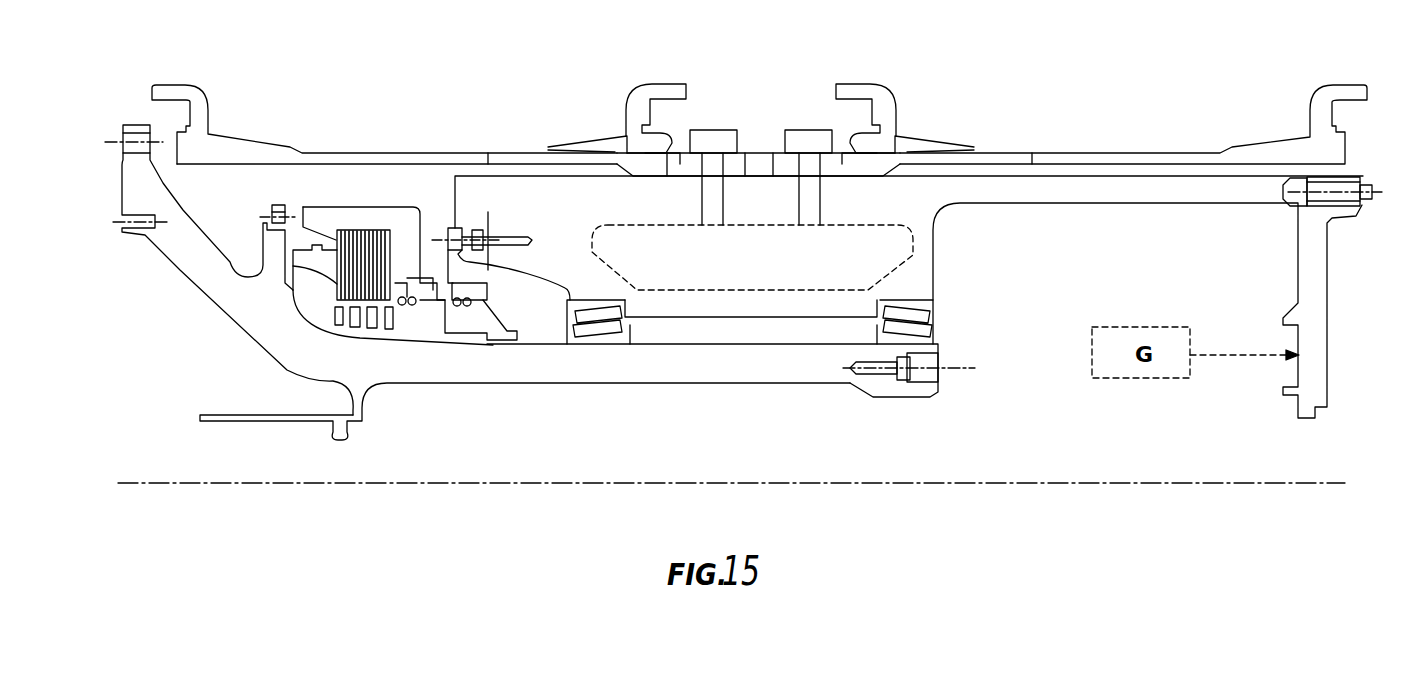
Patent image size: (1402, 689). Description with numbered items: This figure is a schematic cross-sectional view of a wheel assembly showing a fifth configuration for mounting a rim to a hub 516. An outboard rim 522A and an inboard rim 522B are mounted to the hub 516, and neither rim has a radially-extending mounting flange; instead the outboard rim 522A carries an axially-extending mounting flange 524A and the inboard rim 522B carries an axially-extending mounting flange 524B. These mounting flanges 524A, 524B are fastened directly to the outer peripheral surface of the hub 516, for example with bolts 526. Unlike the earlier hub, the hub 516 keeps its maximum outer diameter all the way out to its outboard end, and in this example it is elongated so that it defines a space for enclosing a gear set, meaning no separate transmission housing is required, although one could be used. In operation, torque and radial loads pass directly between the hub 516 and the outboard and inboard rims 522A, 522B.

The hub 516 is at (949, 235).
The outboard rim 522A is at (1198, 160).
The inboard rim 522B is at (330, 157).
The axially-extending mounting flange 524A is at (842, 160).
The axially-extending mounting flange 524B is at (680, 165).
The bolts 526 is at (798, 143).